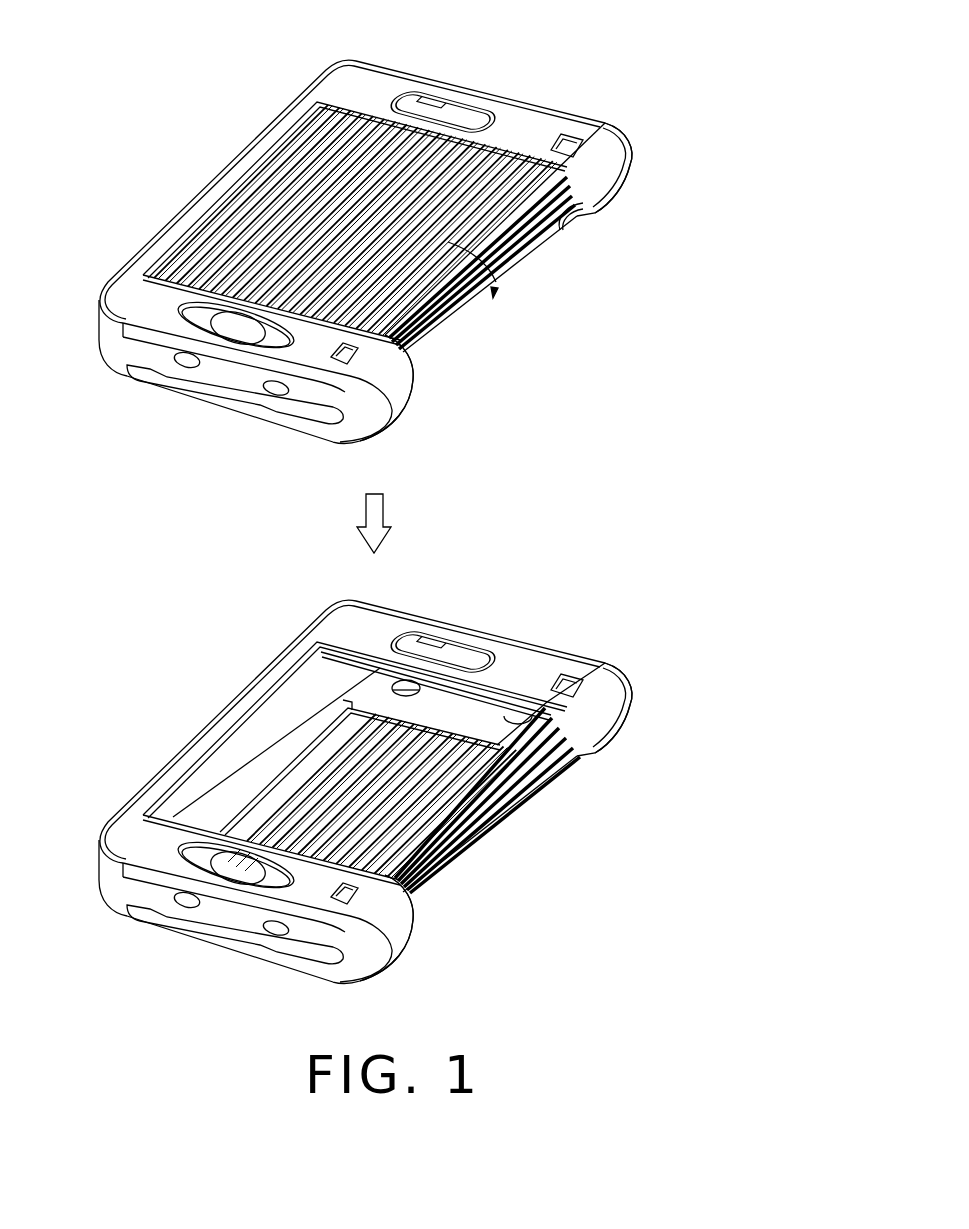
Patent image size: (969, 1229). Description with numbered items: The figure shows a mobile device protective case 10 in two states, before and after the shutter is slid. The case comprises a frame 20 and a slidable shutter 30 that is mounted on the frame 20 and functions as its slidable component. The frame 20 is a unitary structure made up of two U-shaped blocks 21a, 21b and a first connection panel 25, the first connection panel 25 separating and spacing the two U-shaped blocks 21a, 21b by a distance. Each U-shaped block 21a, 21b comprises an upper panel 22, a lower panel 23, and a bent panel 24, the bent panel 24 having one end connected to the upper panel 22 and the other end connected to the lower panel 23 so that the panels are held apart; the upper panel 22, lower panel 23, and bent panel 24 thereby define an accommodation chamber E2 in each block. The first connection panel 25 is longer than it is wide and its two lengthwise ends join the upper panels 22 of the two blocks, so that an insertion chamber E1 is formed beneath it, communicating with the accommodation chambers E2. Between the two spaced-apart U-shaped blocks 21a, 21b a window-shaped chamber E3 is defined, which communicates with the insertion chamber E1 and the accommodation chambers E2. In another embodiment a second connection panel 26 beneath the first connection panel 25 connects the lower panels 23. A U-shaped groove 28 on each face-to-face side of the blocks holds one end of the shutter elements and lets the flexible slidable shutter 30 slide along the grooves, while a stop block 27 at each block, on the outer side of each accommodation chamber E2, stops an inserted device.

The mobile device protective case 10 is at (574, 65).
The frame 20 is at (207, 173).
The U-shaped block 21a is at (644, 155).
The U-shaped block 21b is at (383, 418).
The upper panel 22 is at (342, 83).
The lower panel 23 is at (113, 353).
The bent panel 24 is at (597, 183).
The first connection panel 25 is at (238, 177).
The second connection panel 26 is at (213, 793).
The stop block 27 is at (133, 370).
The U-shaped groove 28 is at (565, 226).
The slidable shutter 30 is at (290, 168).
The insertion chamber E1 is at (257, 748).
The accommodation chamber E2 is at (208, 373).
The window-shaped chamber E3 is at (302, 711).